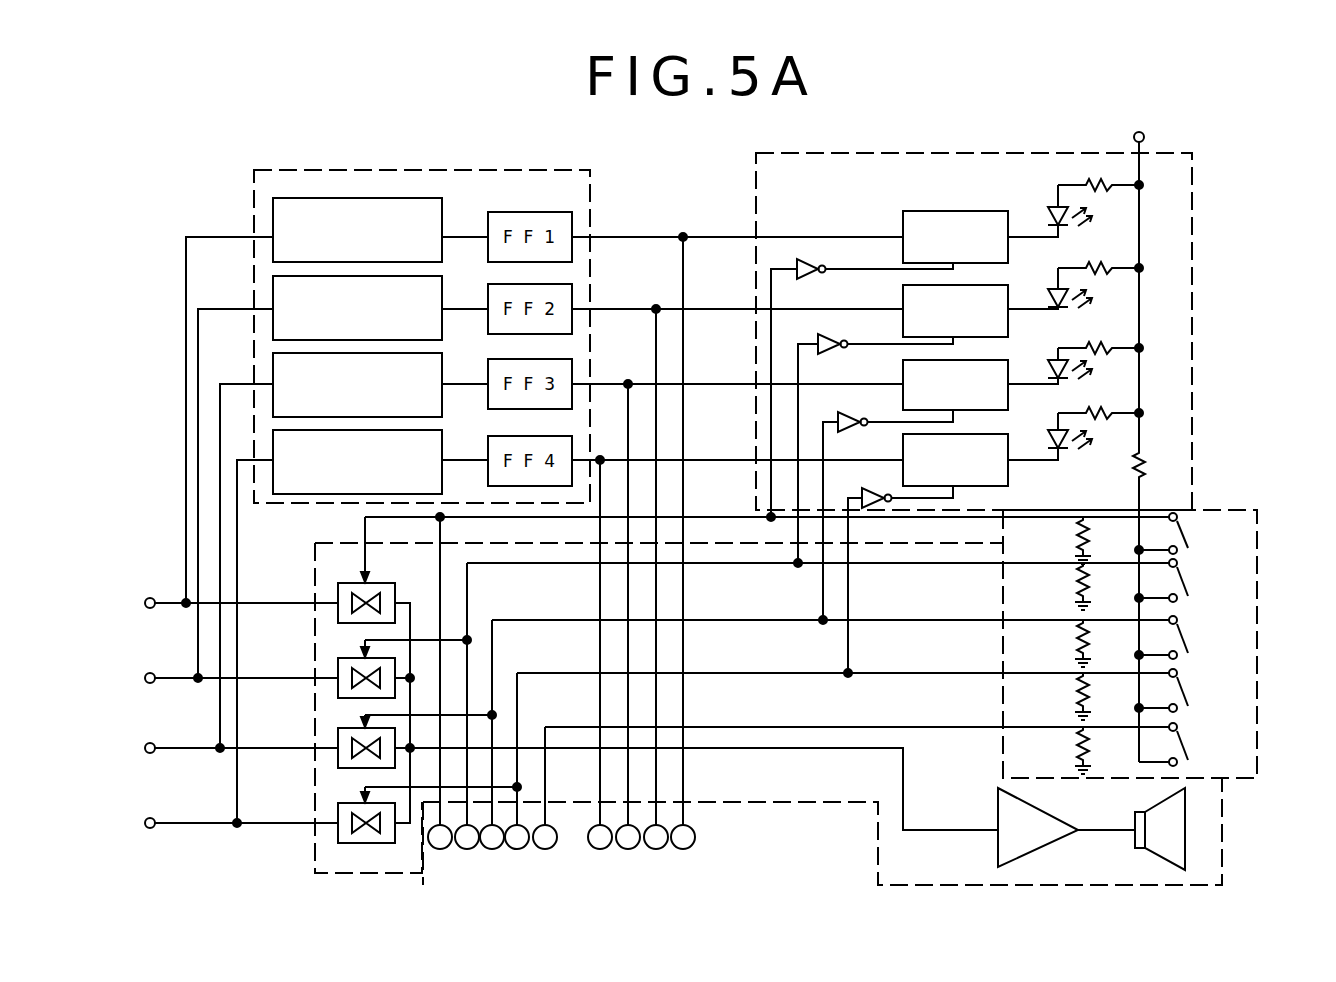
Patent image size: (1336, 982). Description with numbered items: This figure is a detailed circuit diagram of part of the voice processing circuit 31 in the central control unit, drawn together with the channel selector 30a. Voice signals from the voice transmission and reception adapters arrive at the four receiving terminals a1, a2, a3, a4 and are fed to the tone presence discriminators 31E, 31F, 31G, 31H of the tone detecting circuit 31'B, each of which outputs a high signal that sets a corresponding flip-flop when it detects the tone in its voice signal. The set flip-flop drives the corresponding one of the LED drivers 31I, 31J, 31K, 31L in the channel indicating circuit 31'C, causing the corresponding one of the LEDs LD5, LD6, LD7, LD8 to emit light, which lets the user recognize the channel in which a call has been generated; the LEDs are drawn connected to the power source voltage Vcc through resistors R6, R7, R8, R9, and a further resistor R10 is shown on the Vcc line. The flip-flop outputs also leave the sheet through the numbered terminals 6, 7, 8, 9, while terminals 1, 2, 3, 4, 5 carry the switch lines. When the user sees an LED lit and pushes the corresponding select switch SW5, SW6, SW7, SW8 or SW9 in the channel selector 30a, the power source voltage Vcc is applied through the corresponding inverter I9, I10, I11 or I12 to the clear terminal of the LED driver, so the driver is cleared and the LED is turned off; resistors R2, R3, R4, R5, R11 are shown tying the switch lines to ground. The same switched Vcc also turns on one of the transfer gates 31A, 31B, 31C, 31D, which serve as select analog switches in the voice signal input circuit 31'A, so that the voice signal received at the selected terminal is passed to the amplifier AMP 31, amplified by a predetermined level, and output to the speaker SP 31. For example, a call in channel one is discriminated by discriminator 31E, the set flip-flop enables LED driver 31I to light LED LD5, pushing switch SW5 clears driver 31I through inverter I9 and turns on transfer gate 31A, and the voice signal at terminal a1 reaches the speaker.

The transfer gate 31A is at (385, 582).
The mixer 31B is at (348, 652).
The mixer 31C is at (348, 723).
The mixer 31D is at (348, 797).
The tone presence discriminator 31E is at (442, 219).
The tone presence discriminator 31F is at (442, 296).
The tone presence discriminator 31G is at (442, 373).
The tone presence discriminator 31H is at (442, 449).
The LED driver 31I is at (997, 212).
The LED driver 31J is at (1008, 294).
The LED driver 31K is at (1010, 382).
The LED driver 31L is at (1010, 455).
The voice signal input circuit 31'A is at (861, 831).
The tone detecting circuit 31'B is at (454, 336).
The channel indicating circuit 31'C is at (1013, 331).
The channel selector 30a is at (1257, 662).
The inverter I9 is at (862, 379).
The inverter I10 is at (875, 441).
The inverter I11 is at (888, 507).
The inverter I12 is at (900, 571).
The LED LD5 is at (1057, 215).
The LED LD6 is at (1057, 294).
The LED LD7 is at (1057, 371).
The LED LD8 is at (1057, 439).
The resistor R2 is at (1098, 540).
The resistor R3 is at (1098, 586).
The resistor R4 is at (1098, 643).
The resistor R5 is at (1098, 696).
The resistor R6 is at (1098, 174).
The resistor R7 is at (1098, 259).
The resistor R8 is at (1098, 338).
The resistor R9 is at (1098, 404).
The resistor R10 is at (1158, 465).
The resistor R11 is at (1103, 750).
The select switch SW5 is at (1184, 533).
The select switch SW6 is at (1184, 580).
The select switch SW7 is at (1184, 637).
The select switch SW8 is at (1184, 690).
The switch SW9 is at (1186, 744).
The receiving terminal a1 is at (225, 604).
The receiving terminal a2 is at (225, 679).
The receiving terminal a3 is at (225, 749).
The receiving terminal a4 is at (225, 824).
The power source voltage Vcc is at (1139, 280).
The voice processing circuit 31 is at (1091, 829).
The bus terminal 1 is at (440, 683).
The bus terminal 2 is at (467, 706).
The bus terminal 3 is at (492, 734).
The bus terminal 4 is at (517, 761).
The bus terminal 5 is at (545, 788).
The bus terminal 6 is at (600, 652).
The bus terminal 7 is at (628, 614).
The bus terminal 8 is at (656, 577).
The bus terminal 9 is at (683, 541).